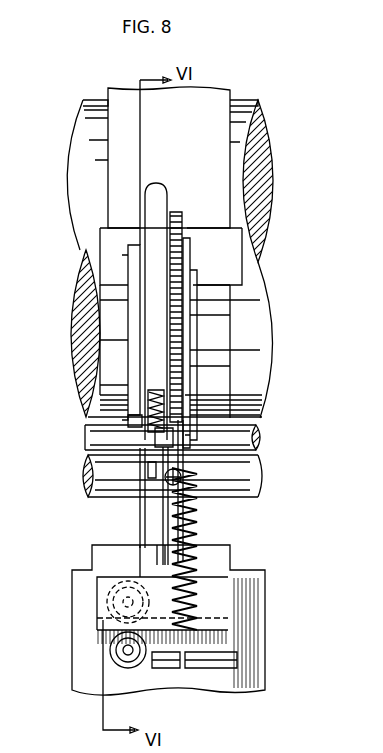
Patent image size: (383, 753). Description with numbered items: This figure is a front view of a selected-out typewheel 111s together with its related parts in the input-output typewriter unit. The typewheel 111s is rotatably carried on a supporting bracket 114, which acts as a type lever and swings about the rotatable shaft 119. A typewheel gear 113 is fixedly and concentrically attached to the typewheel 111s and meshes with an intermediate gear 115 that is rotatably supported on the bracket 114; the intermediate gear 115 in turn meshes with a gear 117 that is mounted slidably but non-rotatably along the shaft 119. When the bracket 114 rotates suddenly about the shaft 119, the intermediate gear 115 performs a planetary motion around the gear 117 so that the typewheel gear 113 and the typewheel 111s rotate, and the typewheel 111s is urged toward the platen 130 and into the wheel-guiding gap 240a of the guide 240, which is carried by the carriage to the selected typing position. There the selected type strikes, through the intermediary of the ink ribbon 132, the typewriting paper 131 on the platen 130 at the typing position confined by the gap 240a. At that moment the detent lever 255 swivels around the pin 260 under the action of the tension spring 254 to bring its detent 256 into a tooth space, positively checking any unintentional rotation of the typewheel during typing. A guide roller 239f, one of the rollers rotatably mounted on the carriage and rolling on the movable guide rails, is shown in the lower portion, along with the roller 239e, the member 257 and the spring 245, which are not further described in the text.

The platen 130 is at (80, 167).
The typewriting paper 131 is at (122, 190).
The ink ribbon 132 is at (232, 268).
The guide 240 is at (128, 255).
The wheel-guiding gap 240a is at (135, 423).
The selected-out typewheel 111s is at (158, 185).
The typewheel gear 113 is at (175, 214).
The intermediate gear 115 is at (185, 395).
The detent 256 is at (188, 310).
The tension spring 254 is at (145, 394).
The supporting bracket 114 is at (190, 465).
The rotatable shaft 119 is at (240, 490).
The detent lever 255 is at (155, 448).
The pin 260 is at (150, 475).
The gear 117 is at (145, 513).
The plunger 257 is at (160, 530).
The coil spring 245 is at (185, 521).
The cam 239e is at (108, 605).
The guide roller 239f is at (110, 655).